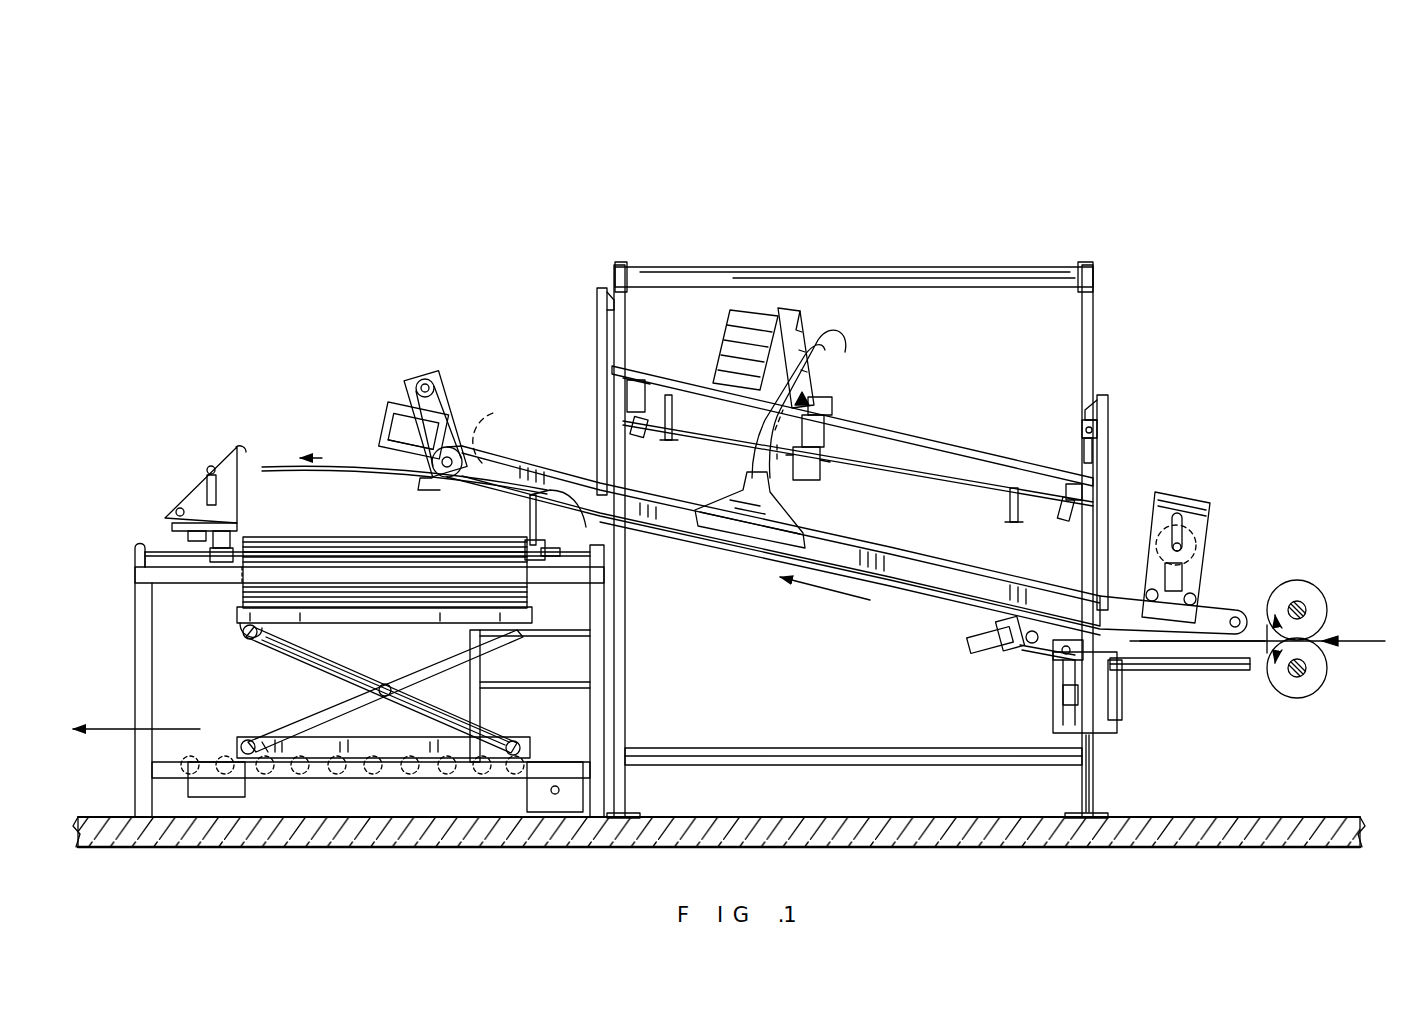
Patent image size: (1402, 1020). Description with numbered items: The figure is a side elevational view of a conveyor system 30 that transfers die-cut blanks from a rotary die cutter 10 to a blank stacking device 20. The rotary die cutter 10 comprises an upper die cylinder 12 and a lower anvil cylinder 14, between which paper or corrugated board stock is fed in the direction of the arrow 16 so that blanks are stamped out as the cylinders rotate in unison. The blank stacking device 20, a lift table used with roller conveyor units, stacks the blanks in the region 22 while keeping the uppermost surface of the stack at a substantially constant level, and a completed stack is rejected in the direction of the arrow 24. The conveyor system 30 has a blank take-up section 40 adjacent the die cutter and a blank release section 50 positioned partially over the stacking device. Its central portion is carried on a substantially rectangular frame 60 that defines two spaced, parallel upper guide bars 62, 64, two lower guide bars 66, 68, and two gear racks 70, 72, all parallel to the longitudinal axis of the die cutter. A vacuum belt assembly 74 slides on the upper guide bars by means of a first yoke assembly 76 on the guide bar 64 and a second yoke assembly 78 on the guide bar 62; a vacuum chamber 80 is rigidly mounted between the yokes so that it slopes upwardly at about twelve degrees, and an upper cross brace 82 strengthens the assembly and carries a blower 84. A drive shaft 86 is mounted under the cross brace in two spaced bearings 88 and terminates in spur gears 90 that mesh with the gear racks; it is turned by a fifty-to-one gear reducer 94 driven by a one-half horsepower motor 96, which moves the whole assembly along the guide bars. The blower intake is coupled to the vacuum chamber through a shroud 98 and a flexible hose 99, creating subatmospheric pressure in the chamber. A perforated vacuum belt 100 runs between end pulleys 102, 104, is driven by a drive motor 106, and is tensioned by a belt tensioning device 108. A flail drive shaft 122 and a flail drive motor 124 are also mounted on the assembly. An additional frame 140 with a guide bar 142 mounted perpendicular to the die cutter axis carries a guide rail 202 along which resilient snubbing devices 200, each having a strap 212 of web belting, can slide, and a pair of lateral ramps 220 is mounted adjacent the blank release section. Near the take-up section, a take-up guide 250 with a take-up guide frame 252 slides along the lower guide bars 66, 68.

The rotary die cutter 10 is at (1285, 573).
The upper cylinder 12 is at (1312, 592).
The lower cylinder 14 is at (1300, 692).
The arrow 16 is at (1362, 640).
The blank stacking device 20 is at (278, 345).
The region 22 is at (350, 600).
The arrow 24 is at (122, 729).
The conveyor system 30 is at (838, 260).
The blank take-up section 40 is at (1225, 595).
The blank release section 50 is at (375, 395).
The frame 60 is at (972, 265).
The upper guide bar 62 is at (597, 320).
The upper guide bar 64 is at (1097, 427).
The lower guide bar 66 is at (1056, 654).
The lower guide bar 68 is at (1095, 742).
The gear rack 70 is at (645, 395).
The gear rack 72 is at (1068, 493).
The vacuum belt assembly 74 is at (942, 547).
The first yoke assembly 76 is at (1115, 500).
The second yoke assembly 78 is at (585, 378).
The vacuum chamber 80 is at (902, 568).
The upper cross brace 82 is at (985, 444).
The blower 84 is at (795, 318).
The drive shaft 86 is at (893, 470).
The bearings 88 is at (668, 437).
The spur gear 90 is at (632, 438).
The gear reducer 94 is at (810, 465).
The motor 96 is at (835, 407).
The shroud 98 is at (742, 520).
The flexible hose 99 is at (832, 372).
The perforated vacuum belt 100 is at (1226, 590).
The end pulley 102 is at (490, 430).
The end pulley 104 is at (1270, 642).
The drive motor 106 is at (432, 371).
The belt tensioning device 108 is at (1205, 490).
The flail drive shaft 122 is at (1025, 630).
The flail drive motor 124 is at (980, 650).
The additional frame 140 is at (130, 625).
The guide bar 142 is at (266, 552).
The resilient snubbing device 200 is at (212, 430).
The guide rail 202 is at (418, 620).
The strap 212 is at (244, 477).
The lateral ramps 220 is at (560, 493).
The take-up guide 250 is at (1170, 675).
The take-up guide frame 252 is at (1053, 700).